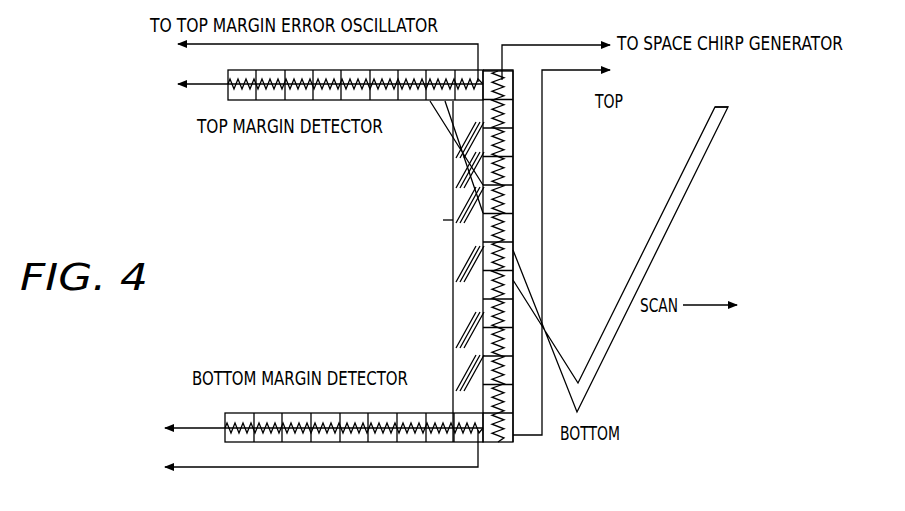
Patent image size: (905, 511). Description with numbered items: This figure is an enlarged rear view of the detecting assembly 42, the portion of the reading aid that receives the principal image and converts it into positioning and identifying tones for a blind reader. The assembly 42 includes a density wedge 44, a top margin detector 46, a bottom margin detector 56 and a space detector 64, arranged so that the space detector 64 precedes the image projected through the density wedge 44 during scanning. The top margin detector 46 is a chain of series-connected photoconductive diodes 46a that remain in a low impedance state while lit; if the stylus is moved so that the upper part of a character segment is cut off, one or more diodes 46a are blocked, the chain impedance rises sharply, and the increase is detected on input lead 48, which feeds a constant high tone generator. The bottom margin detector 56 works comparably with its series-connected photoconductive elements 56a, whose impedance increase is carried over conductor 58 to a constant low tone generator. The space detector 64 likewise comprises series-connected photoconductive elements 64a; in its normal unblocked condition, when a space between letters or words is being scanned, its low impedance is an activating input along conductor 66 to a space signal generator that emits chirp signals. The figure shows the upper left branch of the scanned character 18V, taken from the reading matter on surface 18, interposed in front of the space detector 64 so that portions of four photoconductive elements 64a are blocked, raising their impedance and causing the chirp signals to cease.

The surface 18 is at (686, 232).
The scanned character 18V is at (702, 157).
The detecting assembly 42 is at (508, 22).
The density wedge 44 is at (453, 272).
The top margin detector 46 is at (238, 70).
The photoconductive diode 46a is at (380, 82).
The input lead 48 is at (470, 42).
The bottom margin detector 56 is at (236, 413).
The photoconductive element 56a is at (345, 432).
The conductor 58 is at (542, 266).
The space detector 64 is at (513, 152).
The photoconductive element 64a is at (500, 205).
The conductor 66 is at (565, 45).